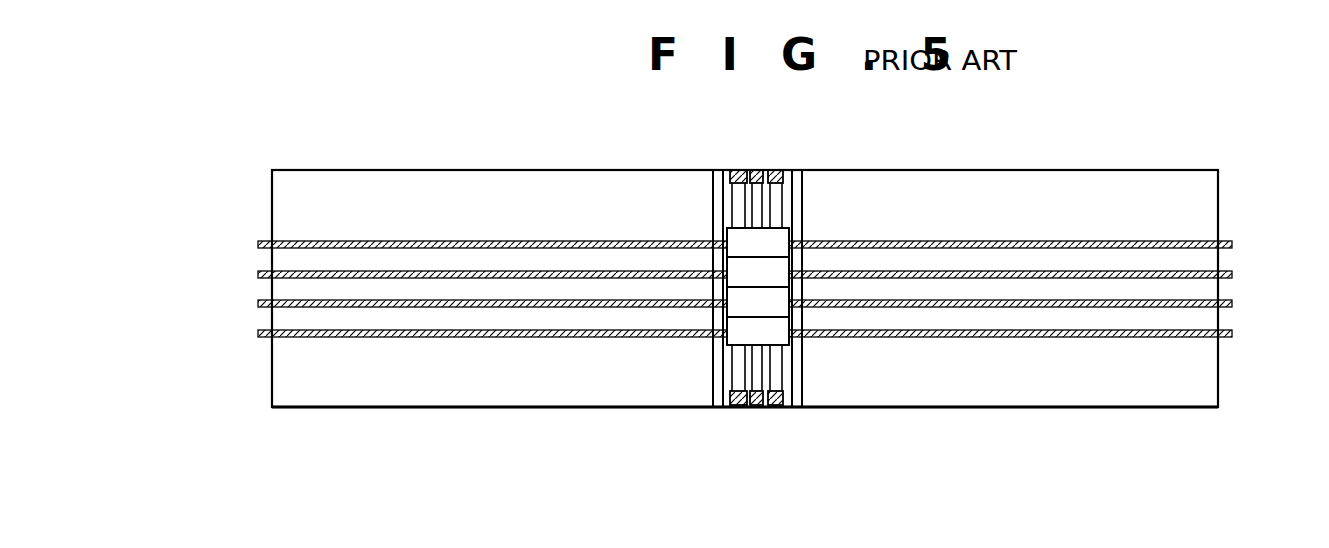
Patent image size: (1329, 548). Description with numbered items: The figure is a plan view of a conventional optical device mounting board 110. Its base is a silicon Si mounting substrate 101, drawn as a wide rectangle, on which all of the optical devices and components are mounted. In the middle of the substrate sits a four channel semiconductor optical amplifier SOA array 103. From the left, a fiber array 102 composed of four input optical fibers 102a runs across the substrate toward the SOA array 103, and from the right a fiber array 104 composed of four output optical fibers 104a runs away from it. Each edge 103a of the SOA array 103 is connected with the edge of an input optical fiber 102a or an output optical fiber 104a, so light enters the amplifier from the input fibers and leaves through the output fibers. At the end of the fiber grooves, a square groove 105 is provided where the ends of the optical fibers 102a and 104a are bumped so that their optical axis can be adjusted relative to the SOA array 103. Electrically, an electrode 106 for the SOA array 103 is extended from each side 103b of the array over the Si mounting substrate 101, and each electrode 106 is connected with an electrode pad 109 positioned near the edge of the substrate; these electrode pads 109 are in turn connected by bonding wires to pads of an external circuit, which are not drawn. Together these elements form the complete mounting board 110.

The Si mounting substrate 101 is at (1170, 383).
The fiber array 102 is at (449, 308).
The input optical fiber 102a is at (360, 338).
The SOA array 103 is at (779, 283).
The edge of SOA array 103a is at (712, 316).
The side of SOA array 103b is at (750, 223).
The fiber array 104 is at (1055, 274).
The output optical fiber 104a is at (1020, 240).
The square groove 105 is at (712, 385).
The electrode 106 is at (782, 200).
The electrode pad 109 is at (752, 172).
The optical device mounting board 110 is at (1040, 140).